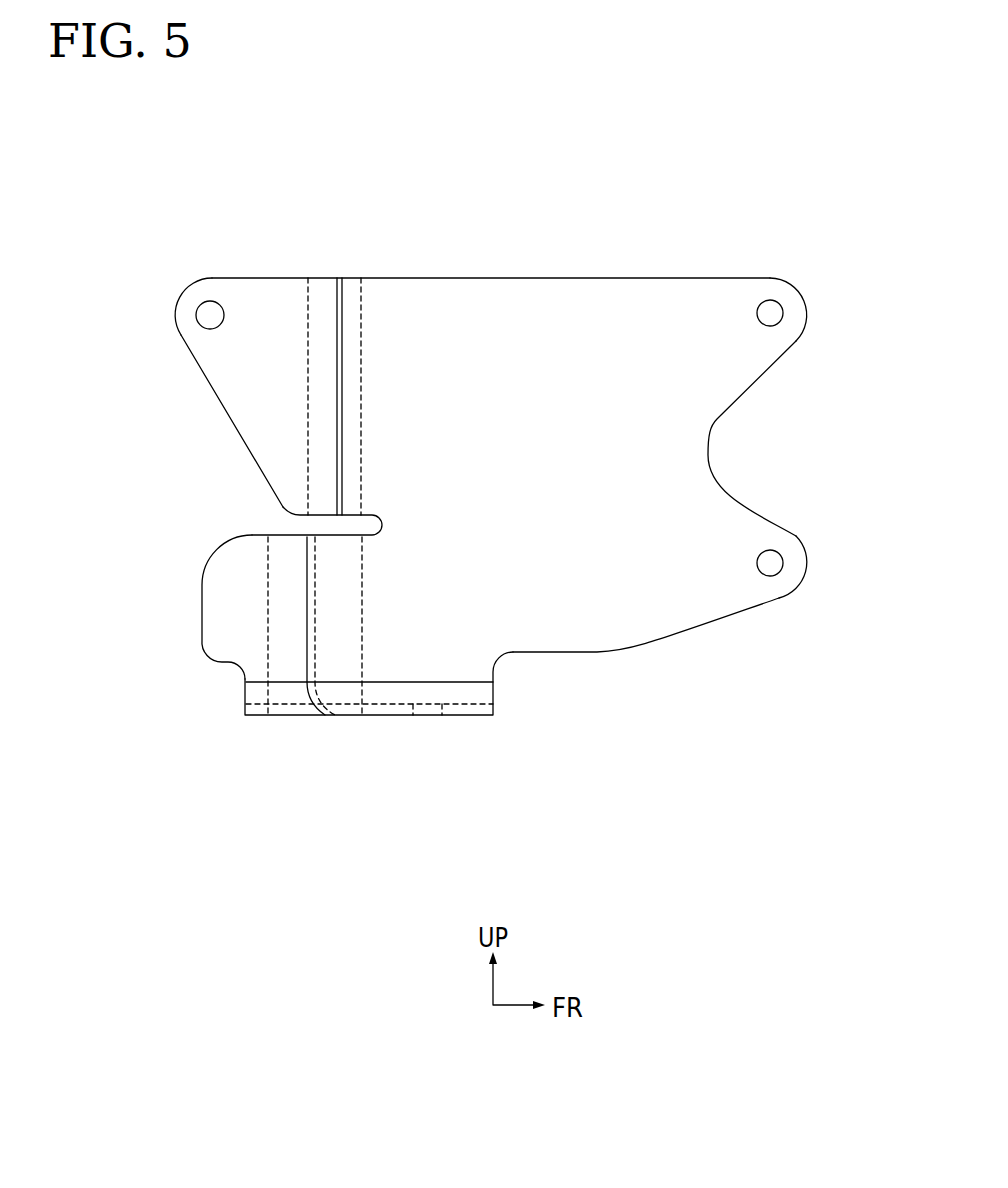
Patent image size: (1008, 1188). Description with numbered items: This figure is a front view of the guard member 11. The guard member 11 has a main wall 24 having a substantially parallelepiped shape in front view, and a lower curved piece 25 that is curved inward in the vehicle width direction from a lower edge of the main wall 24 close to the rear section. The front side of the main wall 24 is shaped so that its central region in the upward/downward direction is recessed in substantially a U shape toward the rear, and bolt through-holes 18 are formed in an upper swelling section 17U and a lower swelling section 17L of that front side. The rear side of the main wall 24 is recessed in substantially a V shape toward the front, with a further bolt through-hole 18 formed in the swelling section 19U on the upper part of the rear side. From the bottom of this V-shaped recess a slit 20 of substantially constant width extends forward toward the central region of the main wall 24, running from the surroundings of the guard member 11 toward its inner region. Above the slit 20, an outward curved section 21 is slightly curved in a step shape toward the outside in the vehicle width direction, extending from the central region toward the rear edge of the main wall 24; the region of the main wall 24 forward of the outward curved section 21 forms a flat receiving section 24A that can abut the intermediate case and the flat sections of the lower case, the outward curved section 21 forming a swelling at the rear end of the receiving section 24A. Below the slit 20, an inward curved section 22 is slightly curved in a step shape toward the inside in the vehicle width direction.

The guard member 11 is at (673, 267).
The swelling section 17U is at (768, 284).
The swelling section 17L is at (787, 582).
The bolt through-holes 18 is at (214, 306).
The swelling section 19U is at (193, 293).
The slit 20 is at (322, 518).
The outward curved section 21 is at (335, 302).
The inward curved section 22 is at (312, 650).
The main wall 24 is at (522, 290).
The receiving section 24A is at (567, 478).
The lower curved piece 25 is at (470, 716).